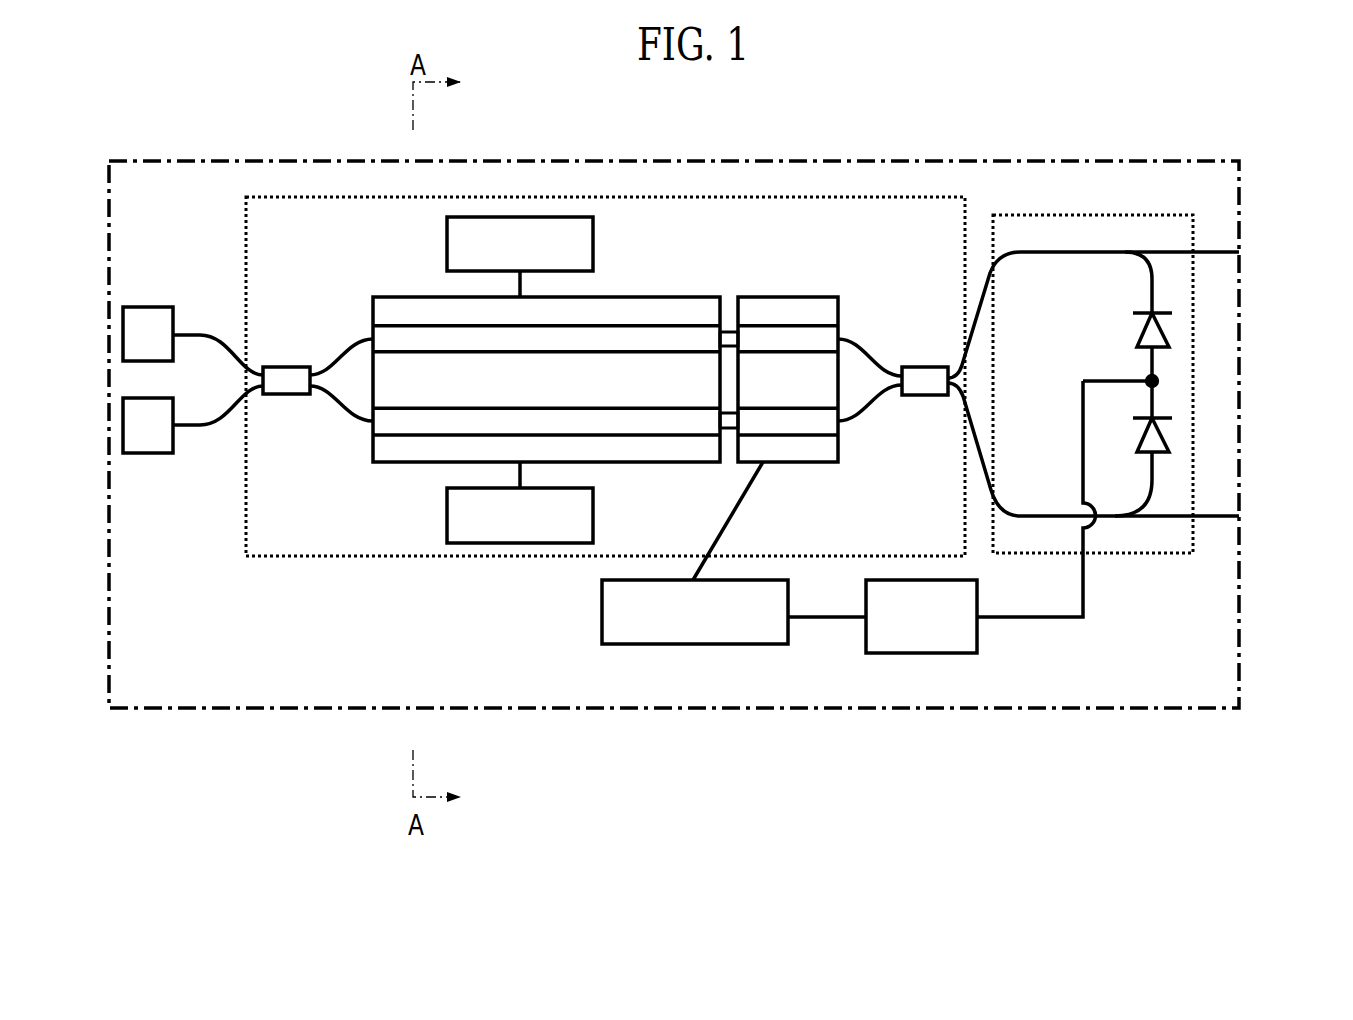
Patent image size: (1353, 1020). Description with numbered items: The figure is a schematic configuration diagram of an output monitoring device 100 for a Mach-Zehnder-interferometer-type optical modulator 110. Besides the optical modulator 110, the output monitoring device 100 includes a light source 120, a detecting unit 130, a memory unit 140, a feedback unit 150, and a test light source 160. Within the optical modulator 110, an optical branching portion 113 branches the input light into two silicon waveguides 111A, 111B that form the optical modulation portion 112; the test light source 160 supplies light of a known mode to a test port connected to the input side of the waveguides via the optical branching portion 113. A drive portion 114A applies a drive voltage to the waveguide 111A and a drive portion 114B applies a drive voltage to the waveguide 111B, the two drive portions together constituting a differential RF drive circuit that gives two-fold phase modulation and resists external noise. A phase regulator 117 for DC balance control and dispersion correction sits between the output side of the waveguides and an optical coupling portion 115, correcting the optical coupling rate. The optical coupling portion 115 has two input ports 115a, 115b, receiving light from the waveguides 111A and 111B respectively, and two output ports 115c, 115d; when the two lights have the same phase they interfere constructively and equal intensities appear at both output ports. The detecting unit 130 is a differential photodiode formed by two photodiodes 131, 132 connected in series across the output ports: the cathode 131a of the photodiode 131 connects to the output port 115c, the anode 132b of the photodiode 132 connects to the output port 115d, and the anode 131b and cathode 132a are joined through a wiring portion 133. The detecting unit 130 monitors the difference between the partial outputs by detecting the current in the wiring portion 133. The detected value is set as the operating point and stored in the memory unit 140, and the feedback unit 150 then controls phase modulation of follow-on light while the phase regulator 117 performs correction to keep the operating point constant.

The output monitoring device 100 is at (1089, 156).
The optical modulator 110 is at (774, 193).
The optical modulation portion 112 is at (527, 433).
The waveguide 111A is at (607, 338).
The waveguide 111B is at (415, 427).
The optical branching portion 113 is at (290, 375).
The drive portion 114A is at (534, 234).
The drive portion 114B is at (507, 518).
The optical coupling portion 115 is at (928, 380).
The input port 115a is at (877, 357).
The input port 115b is at (880, 403).
The output port 115c is at (983, 300).
The output port 115d is at (986, 472).
The phase regulator 117 is at (801, 282).
The light source 120 is at (150, 316).
The detecting unit 130 is at (1171, 211).
The photodiode 131 is at (1236, 327).
The cathode 131a is at (1171, 304).
The anode 131b is at (1166, 352).
The photodiode 132 is at (1227, 448).
The cathode 132a is at (1171, 408).
The anode 132b is at (1166, 458).
The wiring portion 133 is at (1134, 374).
The memory unit 140 is at (902, 625).
The feedback unit 150 is at (682, 618).
The test light source 160 is at (153, 447).